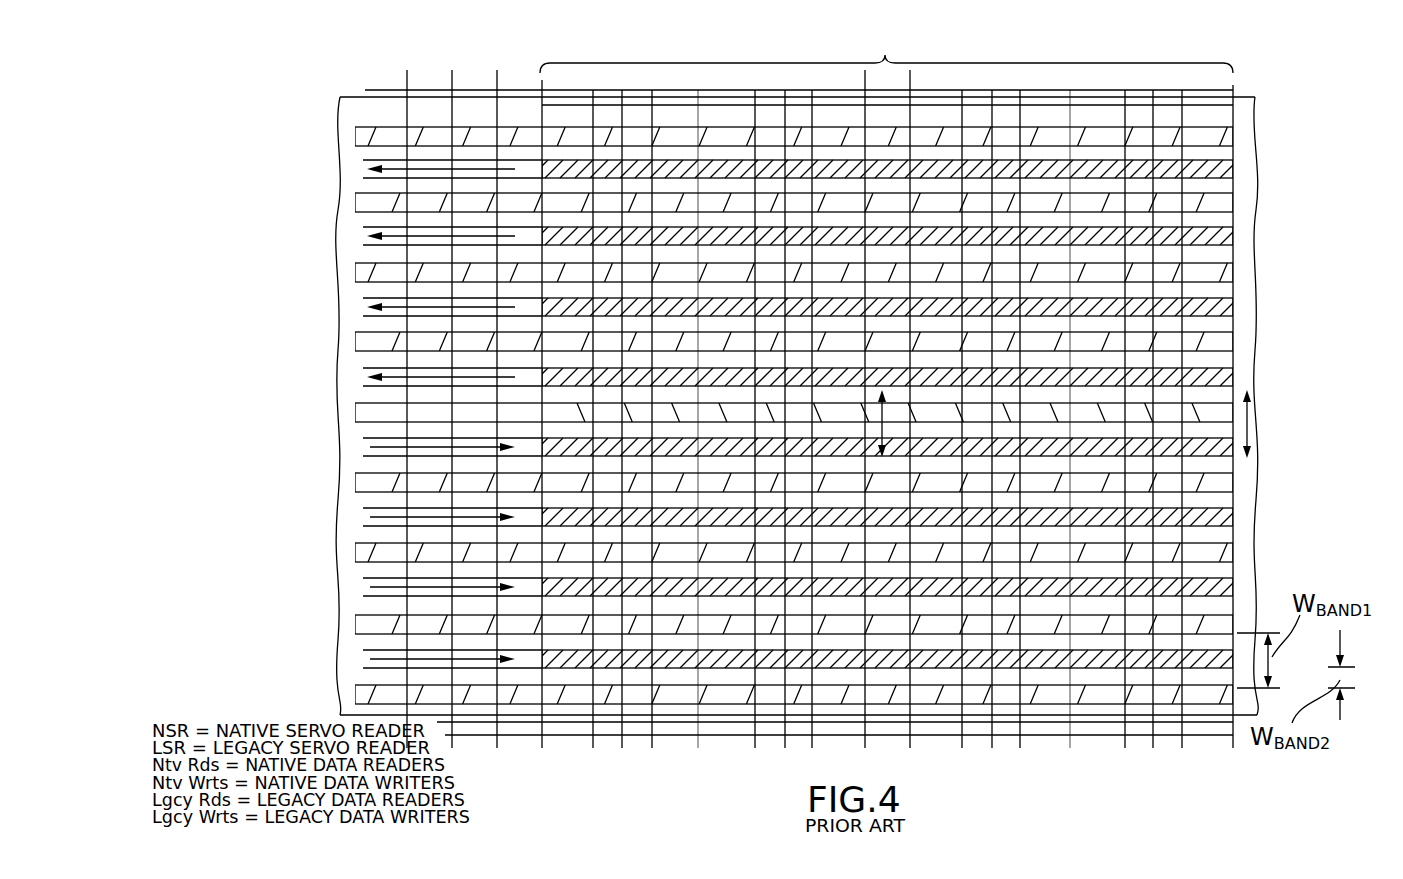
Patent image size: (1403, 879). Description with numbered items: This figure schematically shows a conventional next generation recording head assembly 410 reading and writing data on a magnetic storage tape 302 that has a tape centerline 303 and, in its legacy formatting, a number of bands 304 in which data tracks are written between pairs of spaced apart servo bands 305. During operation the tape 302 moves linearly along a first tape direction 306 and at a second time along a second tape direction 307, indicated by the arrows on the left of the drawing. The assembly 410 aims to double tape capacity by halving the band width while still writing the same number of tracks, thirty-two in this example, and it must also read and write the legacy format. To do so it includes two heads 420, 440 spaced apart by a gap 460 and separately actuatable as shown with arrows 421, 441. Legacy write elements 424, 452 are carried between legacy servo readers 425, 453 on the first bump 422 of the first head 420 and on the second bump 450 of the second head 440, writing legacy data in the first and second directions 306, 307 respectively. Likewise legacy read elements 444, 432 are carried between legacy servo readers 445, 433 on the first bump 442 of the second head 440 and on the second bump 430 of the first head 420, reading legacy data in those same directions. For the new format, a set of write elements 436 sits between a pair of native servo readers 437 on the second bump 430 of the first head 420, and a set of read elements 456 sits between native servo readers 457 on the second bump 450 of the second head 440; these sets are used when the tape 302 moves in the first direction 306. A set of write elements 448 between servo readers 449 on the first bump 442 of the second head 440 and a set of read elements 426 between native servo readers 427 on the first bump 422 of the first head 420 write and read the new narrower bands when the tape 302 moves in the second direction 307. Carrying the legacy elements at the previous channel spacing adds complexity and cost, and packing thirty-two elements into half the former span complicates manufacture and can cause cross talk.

The tape 302 is at (341, 97).
The tape centerline 303 is at (355, 410).
The bands 304 is at (413, 635).
The servo bands 305 is at (387, 657).
The first tape direction 306 is at (390, 515).
The second tape direction 307 is at (407, 237).
The next generation recording head assembly 410 is at (886, 63).
The first head 420 is at (699, 745).
The actuation arrow 421 is at (882, 425).
The first bump 422 is at (605, 737).
The legacy write elements 424 is at (636, 677).
The legacy servo readers 425 is at (670, 690).
The read elements 426 is at (577, 344).
The native servo readers 427 is at (687, 372).
The second bump 430 is at (777, 737).
The legacy read elements 432 is at (754, 344).
The legacy servo readers 433 is at (852, 408).
The write elements 436 is at (829, 681).
The native servo readers 437 is at (848, 692).
The second head 440 is at (1087, 745).
The actuation arrow 441 is at (1247, 433).
The first bump 442 is at (1000, 737).
The legacy read elements 444 is at (1018, 629).
The legacy servo readers 445 is at (920, 687).
The write elements 448 is at (944, 344).
The servo readers 449 is at (1060, 372).
The second bump 450 is at (1170, 737).
The legacy write elements 452 is at (1119, 345).
The legacy servo readers 453 is at (1223, 408).
The read elements 456 is at (1200, 671).
The native servo readers 457 is at (1077, 700).
The gap 460 is at (888, 88).